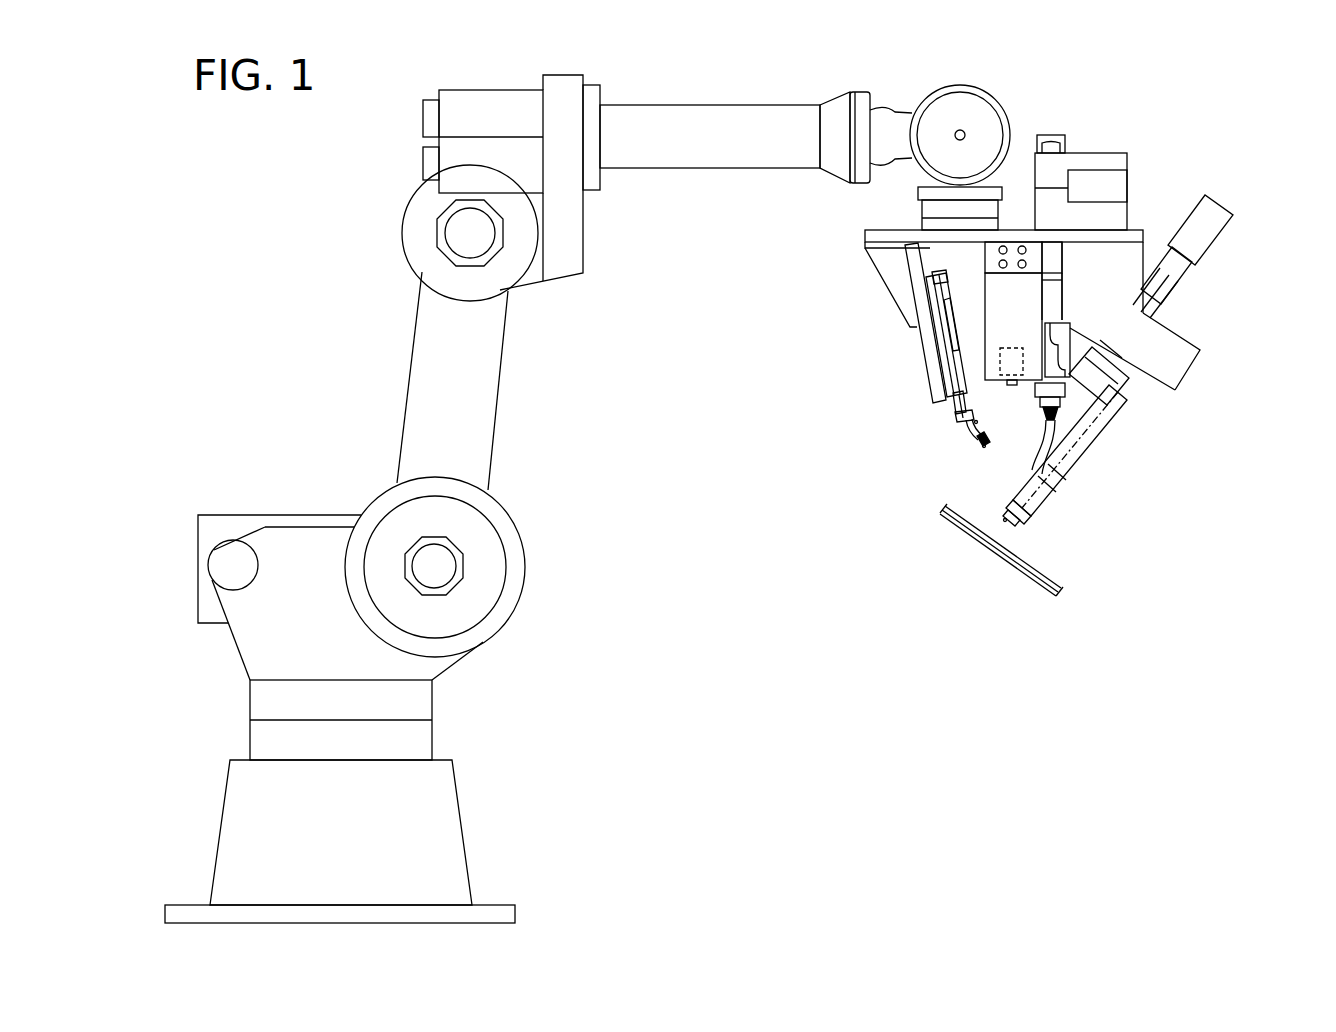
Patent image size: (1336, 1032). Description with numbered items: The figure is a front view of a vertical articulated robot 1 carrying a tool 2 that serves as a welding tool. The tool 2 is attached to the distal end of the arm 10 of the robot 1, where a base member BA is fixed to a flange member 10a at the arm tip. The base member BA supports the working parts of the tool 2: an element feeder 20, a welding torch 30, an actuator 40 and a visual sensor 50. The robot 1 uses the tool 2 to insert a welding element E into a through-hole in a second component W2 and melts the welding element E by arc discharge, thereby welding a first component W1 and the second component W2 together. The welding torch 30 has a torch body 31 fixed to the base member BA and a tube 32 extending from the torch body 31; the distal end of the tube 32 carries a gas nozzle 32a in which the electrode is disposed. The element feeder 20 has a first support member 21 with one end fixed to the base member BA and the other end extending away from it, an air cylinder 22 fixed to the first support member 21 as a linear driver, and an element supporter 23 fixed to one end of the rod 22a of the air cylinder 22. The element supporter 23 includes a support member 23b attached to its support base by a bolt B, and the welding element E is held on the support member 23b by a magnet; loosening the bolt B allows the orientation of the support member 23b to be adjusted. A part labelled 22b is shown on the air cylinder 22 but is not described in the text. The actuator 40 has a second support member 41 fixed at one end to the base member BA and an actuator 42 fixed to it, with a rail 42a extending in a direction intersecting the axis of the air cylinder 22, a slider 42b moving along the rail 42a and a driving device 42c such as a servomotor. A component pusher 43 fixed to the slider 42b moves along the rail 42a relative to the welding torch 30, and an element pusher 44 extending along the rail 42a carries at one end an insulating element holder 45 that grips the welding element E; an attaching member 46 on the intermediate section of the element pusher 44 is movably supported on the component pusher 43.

The vertical articulated robot 1 is at (612, 72).
The arm 10 is at (740, 105).
The flange member 10a is at (922, 215).
The base member BA is at (880, 238).
The tool 2 is at (832, 250).
The element feeder 20 is at (905, 395).
The first support member 21 is at (926, 345).
The air cylinder 22 is at (944, 300).
The rod 22a is at (953, 405).
The sensor slide 22b is at (948, 312).
The element supporter 23 is at (960, 425).
The support member 23b is at (972, 440).
The bolt B is at (976, 420).
The welding element E is at (982, 448).
The welding torch 30 is at (1088, 328).
The torch body 31 is at (1030, 393).
The tube 32 is at (1058, 437).
The gas nozzle 32a is at (1000, 490).
The actuator 40 is at (1175, 192).
The second support member 41 is at (1123, 255).
The actuator 42 is at (1163, 300).
The rail 42a is at (1098, 395).
The slider 42b is at (1135, 363).
The driving device 42c is at (1212, 233).
The component pusher 43 is at (1048, 470).
The element pusher 44 is at (1020, 508).
The element holder 45 is at (1010, 520).
The attaching member 46 is at (1045, 415).
The visual sensor 50 is at (1012, 348).
The first component W1 is at (1012, 563).
The second component W2 is at (1055, 580).